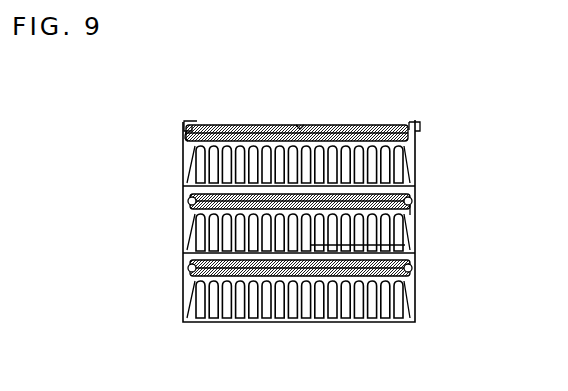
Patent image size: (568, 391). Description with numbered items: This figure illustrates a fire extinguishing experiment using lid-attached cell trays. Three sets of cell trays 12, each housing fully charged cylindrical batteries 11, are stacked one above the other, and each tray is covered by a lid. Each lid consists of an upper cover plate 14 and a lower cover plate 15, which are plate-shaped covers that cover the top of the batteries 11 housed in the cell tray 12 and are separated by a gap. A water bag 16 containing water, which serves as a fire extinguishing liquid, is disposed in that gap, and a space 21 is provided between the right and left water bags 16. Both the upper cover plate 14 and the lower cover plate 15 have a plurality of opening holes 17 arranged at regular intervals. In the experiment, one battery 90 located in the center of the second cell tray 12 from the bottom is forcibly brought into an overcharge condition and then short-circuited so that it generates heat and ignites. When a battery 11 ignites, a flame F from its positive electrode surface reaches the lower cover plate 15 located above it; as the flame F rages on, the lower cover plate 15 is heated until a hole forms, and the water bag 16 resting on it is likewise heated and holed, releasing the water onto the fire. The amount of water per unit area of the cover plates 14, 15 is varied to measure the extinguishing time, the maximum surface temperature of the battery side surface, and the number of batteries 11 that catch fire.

The secondary battery 11 is at (190, 166).
The cell tray 12 is at (430, 150).
The upper cover plate 14 is at (190, 120).
The lower cover plate 15 is at (183, 139).
The water bag 16 is at (248, 118).
The opening holes 17 is at (213, 121).
The space 21 is at (305, 121).
The flame F is at (413, 211).
The battery 90 is at (318, 248).